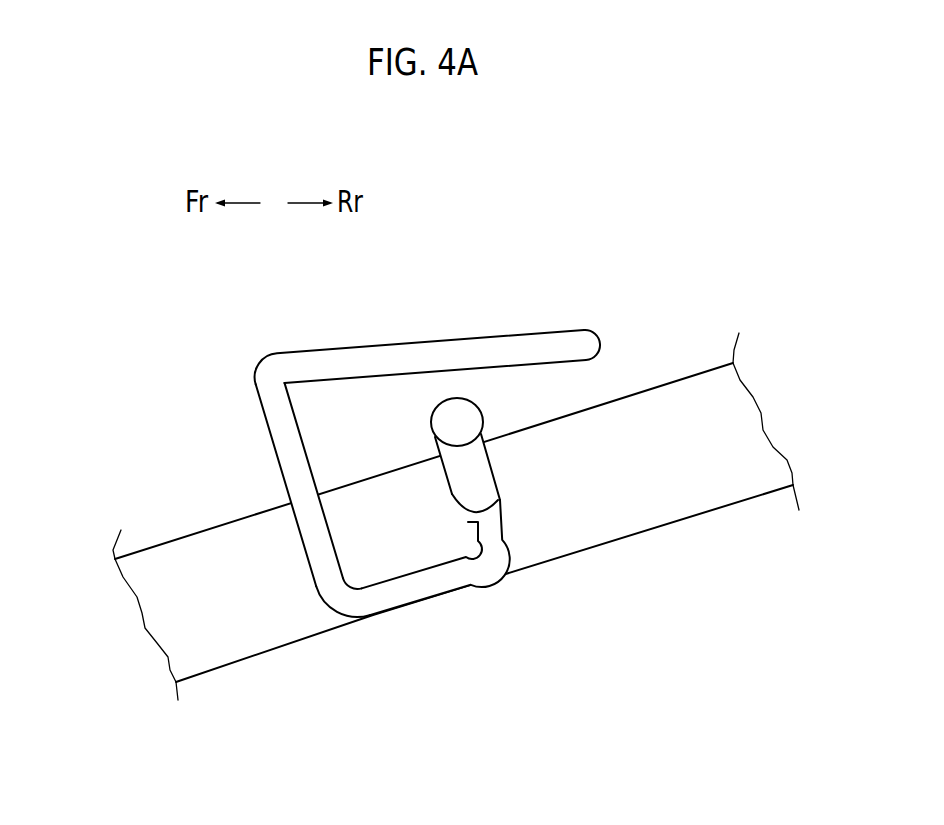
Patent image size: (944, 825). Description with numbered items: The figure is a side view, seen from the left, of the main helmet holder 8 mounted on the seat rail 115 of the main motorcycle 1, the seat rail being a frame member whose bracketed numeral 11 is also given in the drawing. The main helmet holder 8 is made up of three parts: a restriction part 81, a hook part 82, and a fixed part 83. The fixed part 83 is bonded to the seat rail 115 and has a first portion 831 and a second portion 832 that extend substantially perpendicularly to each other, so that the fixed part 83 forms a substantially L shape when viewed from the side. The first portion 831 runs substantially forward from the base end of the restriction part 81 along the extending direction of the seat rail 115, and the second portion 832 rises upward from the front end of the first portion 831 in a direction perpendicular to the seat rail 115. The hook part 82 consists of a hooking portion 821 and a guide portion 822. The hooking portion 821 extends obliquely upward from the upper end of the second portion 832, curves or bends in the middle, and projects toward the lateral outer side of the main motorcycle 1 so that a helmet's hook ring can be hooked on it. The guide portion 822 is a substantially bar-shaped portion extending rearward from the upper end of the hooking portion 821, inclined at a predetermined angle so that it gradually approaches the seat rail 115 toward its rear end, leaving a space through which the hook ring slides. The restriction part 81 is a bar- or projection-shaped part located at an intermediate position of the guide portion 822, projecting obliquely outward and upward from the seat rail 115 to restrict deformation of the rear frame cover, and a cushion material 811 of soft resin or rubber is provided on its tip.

The main motorcycle 1 is at (456, 522).
The main helmet holder 8 is at (327, 490).
The vehicle body 11 is at (456, 516).
The seat rail 115 is at (711, 473).
The restriction part 81 is at (509, 462).
The cushion material 811 is at (481, 447).
The hook part 82 is at (327, 458).
The hooking portion 821 is at (273, 416).
The guide portion 822 is at (355, 357).
The fixed part 83 is at (404, 640).
The first portion 831 is at (406, 597).
The second portion 832 is at (316, 565).